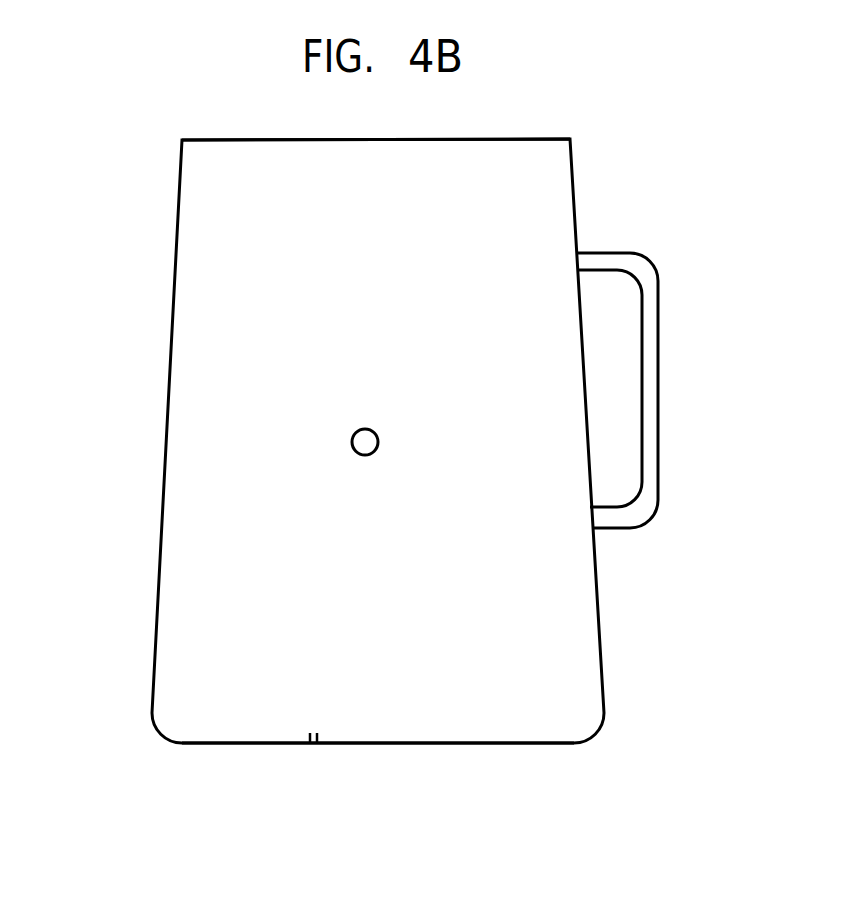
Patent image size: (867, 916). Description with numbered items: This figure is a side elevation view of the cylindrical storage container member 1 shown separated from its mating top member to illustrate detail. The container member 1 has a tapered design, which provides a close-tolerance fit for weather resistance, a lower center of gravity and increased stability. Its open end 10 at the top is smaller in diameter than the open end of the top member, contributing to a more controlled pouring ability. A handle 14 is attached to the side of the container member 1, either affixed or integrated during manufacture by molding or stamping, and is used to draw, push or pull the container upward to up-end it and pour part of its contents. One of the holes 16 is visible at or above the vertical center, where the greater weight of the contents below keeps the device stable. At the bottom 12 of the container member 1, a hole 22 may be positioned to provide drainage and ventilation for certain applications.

The cylindrical storage container member 1 is at (265, 278).
The open end 10 is at (273, 138).
The bottom 12 is at (453, 743).
The handle 14 is at (660, 448).
The holes 16 is at (378, 445).
The hole 22 is at (312, 743).